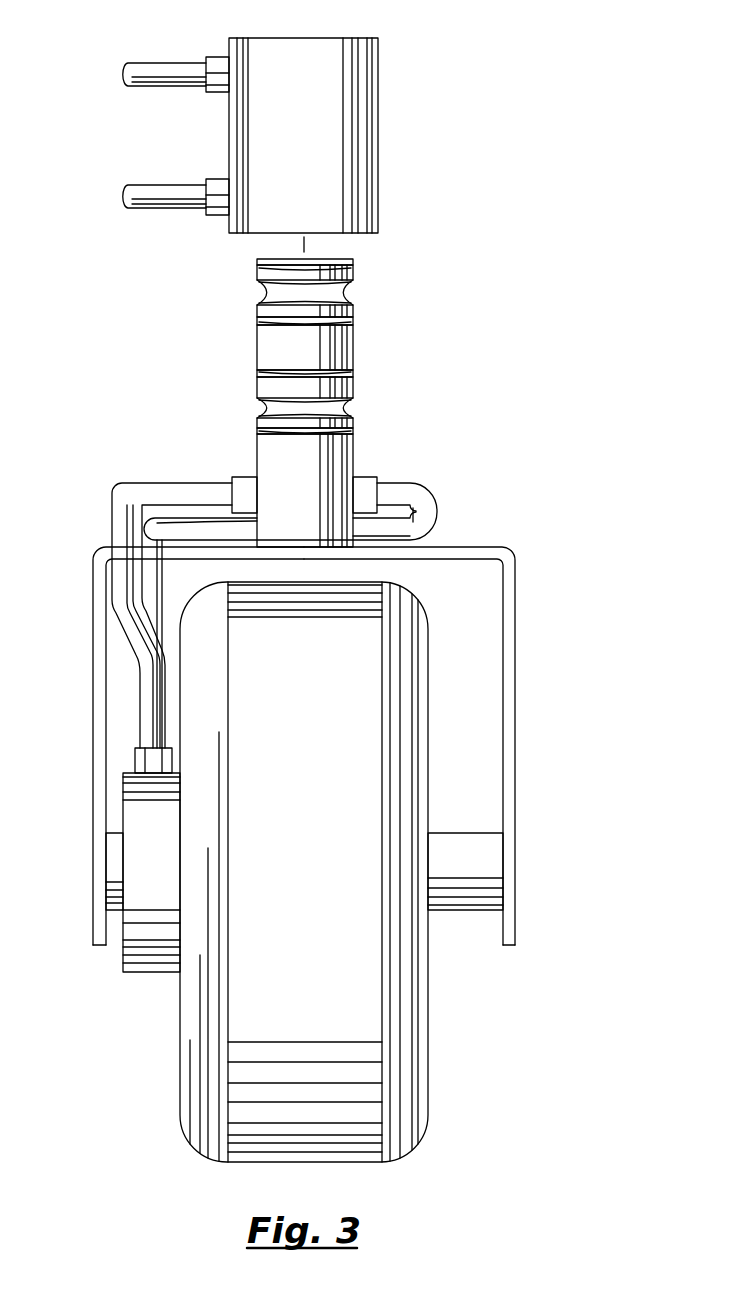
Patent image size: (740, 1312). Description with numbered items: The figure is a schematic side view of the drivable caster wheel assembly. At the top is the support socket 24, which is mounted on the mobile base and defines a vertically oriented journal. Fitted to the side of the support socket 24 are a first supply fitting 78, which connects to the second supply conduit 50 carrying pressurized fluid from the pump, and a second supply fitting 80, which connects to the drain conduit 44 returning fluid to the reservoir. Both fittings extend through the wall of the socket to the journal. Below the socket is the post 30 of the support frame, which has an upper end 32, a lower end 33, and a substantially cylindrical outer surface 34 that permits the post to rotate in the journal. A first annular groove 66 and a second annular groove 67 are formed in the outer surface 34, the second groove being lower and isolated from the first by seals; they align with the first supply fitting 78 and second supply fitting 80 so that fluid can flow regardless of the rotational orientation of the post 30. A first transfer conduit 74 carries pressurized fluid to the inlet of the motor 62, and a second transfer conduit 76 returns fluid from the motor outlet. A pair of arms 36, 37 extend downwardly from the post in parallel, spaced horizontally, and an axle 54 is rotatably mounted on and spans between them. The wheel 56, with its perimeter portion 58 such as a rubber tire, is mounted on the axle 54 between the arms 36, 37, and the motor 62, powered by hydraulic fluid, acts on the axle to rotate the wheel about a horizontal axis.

The support socket 24 is at (330, 135).
The second supply conduit 50 is at (163, 80).
The first supply fitting 78 is at (218, 60).
The drain conduit 44 is at (170, 200).
The second supply fitting 80 is at (218, 183).
The upper end 32 is at (333, 258).
The first annular groove 66 is at (280, 293).
The outer surface 34 is at (335, 342).
The second annular groove 67 is at (280, 413).
The post 30 is at (323, 449).
The lower end 33 is at (298, 537).
The second transfer conduit 76 is at (187, 492).
The first transfer conduit 74 is at (415, 492).
The arm 36 is at (102, 690).
The arm 37 is at (507, 697).
The perimeter portion 58 is at (412, 1013).
The wheel 56 is at (437, 957).
The axle 54 is at (467, 852).
The motor 62 is at (148, 818).